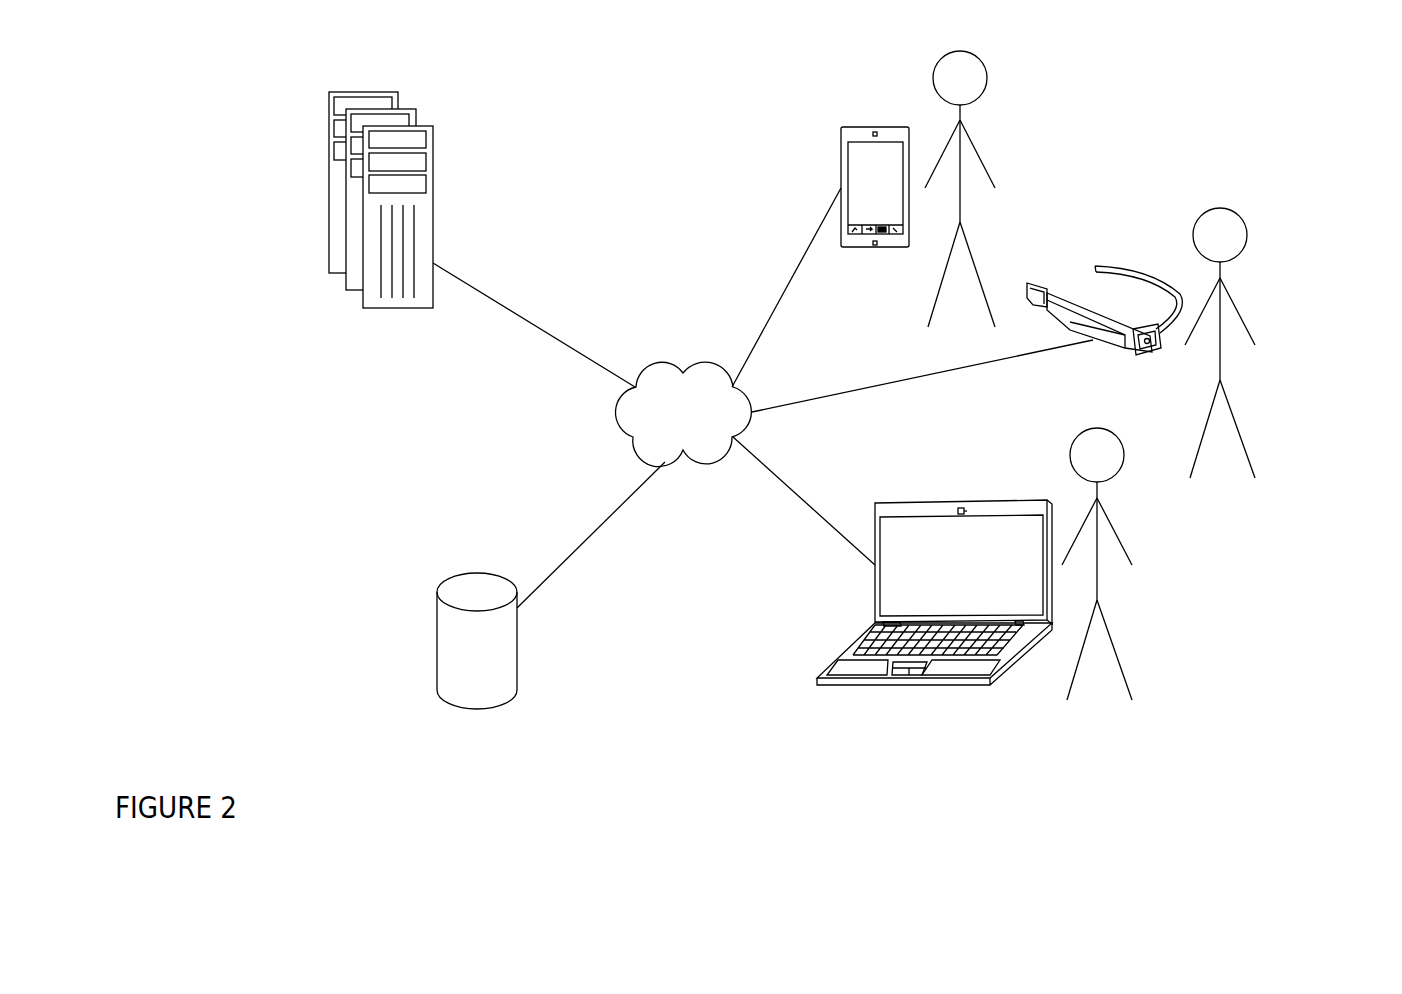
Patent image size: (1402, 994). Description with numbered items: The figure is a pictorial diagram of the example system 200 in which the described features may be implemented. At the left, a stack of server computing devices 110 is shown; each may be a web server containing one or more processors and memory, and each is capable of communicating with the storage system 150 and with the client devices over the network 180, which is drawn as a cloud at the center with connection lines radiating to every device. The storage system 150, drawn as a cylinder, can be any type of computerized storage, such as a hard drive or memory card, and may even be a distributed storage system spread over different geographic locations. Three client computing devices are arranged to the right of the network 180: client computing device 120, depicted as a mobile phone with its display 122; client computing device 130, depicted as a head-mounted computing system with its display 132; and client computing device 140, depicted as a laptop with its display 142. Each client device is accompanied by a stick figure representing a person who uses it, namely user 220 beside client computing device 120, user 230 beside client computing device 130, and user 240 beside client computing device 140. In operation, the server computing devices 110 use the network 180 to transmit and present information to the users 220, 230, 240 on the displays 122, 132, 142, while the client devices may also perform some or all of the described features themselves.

The server computing device 110 is at (433, 165).
The client computing device 120 is at (841, 158).
The display 122 is at (848, 183).
The client computing device 130 is at (1119, 268).
The display 132 is at (1147, 350).
The client computing device 140 is at (874, 570).
The display 142 is at (880, 607).
The storage system 150 is at (517, 658).
The network 180 is at (683, 414).
The system environment 200 is at (192, 766).
The user 220 is at (990, 177).
The user 230 is at (1250, 335).
The user 240 is at (1128, 555).